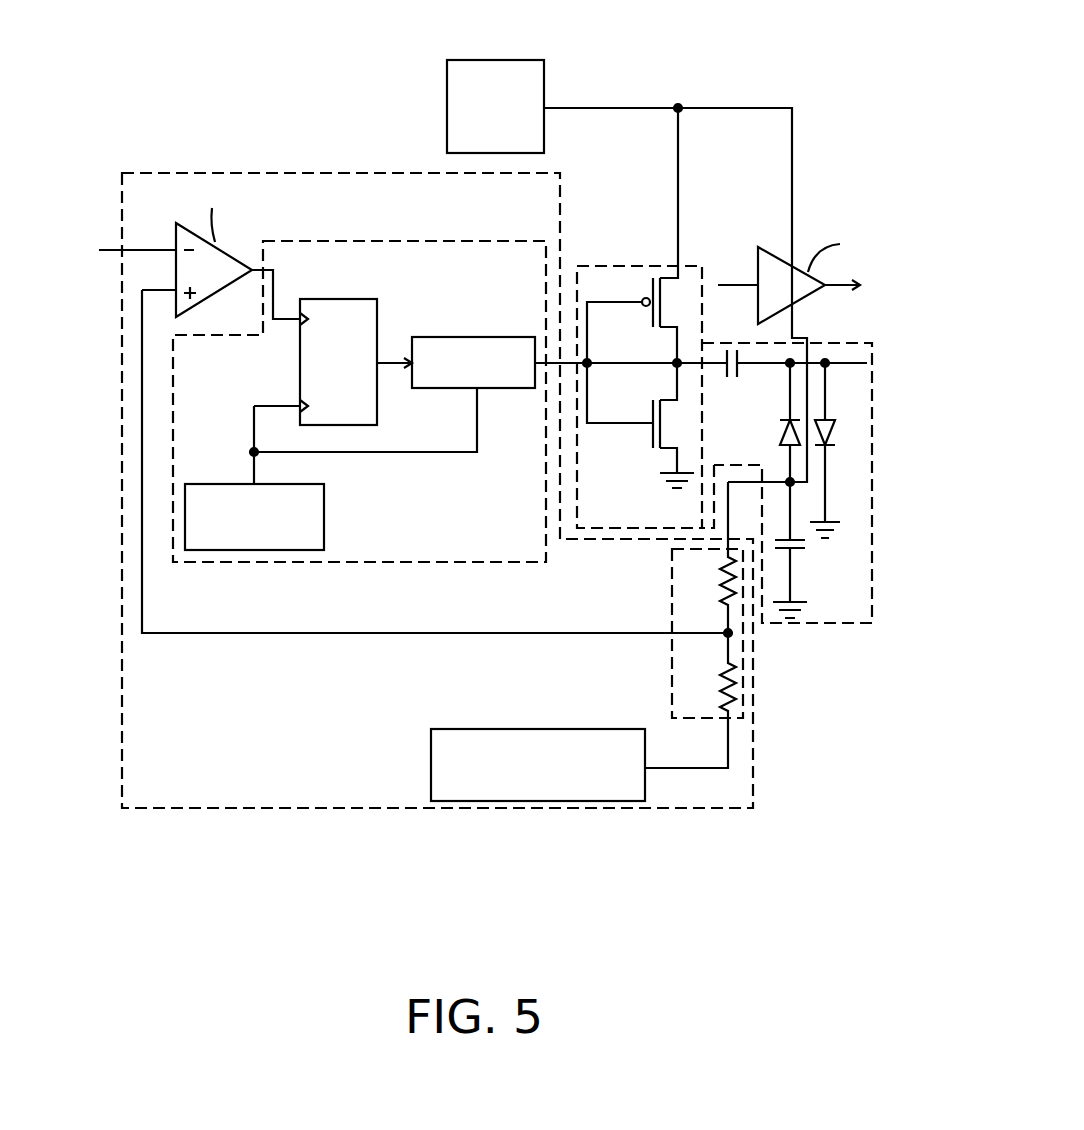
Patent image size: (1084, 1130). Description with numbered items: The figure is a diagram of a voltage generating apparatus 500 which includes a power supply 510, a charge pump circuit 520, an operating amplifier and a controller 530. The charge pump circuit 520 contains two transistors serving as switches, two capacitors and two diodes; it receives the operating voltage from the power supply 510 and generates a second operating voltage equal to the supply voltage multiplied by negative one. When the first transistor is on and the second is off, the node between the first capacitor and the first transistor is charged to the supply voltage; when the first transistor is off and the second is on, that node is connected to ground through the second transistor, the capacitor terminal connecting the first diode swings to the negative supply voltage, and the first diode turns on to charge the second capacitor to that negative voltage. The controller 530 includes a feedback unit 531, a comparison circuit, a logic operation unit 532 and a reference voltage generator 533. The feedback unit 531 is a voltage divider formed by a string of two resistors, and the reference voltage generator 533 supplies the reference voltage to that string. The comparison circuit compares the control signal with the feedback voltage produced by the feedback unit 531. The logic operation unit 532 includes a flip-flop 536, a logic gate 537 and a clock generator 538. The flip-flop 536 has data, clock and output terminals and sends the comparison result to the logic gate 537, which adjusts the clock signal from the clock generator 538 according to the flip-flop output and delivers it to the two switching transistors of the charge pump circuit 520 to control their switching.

The voltage generating apparatus 500 is at (872, 930).
The power supply 510 is at (515, 60).
The charge pump circuit 520 is at (822, 623).
The controller 530 is at (435, 809).
The feedback unit 531 is at (668, 695).
The logic operation unit 532 is at (430, 562).
The reference voltage generator 533 is at (431, 763).
The flip-flop 536 is at (345, 299).
The logic gate 537 is at (450, 337).
The clock generator 538 is at (324, 517).